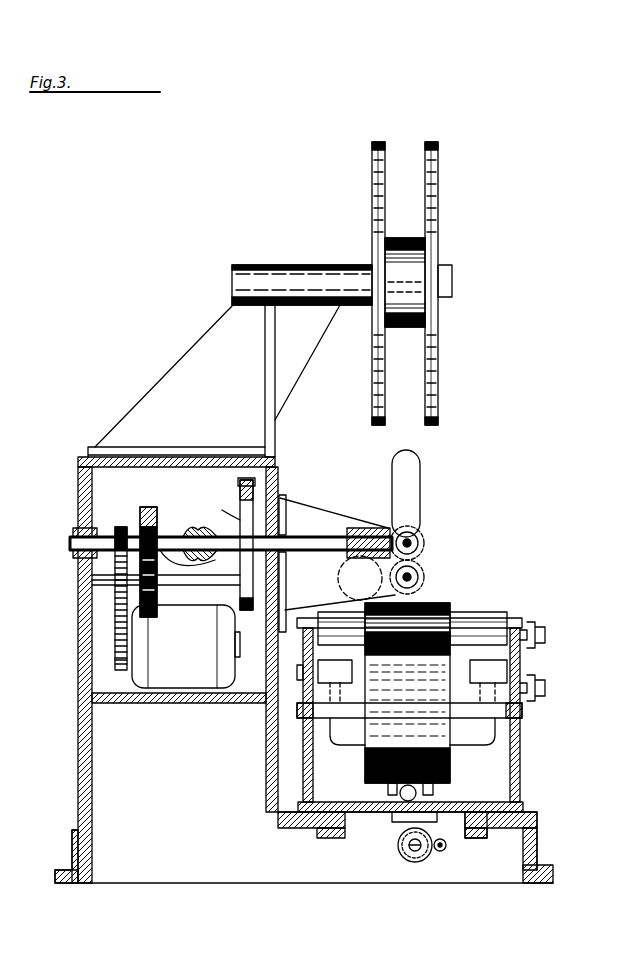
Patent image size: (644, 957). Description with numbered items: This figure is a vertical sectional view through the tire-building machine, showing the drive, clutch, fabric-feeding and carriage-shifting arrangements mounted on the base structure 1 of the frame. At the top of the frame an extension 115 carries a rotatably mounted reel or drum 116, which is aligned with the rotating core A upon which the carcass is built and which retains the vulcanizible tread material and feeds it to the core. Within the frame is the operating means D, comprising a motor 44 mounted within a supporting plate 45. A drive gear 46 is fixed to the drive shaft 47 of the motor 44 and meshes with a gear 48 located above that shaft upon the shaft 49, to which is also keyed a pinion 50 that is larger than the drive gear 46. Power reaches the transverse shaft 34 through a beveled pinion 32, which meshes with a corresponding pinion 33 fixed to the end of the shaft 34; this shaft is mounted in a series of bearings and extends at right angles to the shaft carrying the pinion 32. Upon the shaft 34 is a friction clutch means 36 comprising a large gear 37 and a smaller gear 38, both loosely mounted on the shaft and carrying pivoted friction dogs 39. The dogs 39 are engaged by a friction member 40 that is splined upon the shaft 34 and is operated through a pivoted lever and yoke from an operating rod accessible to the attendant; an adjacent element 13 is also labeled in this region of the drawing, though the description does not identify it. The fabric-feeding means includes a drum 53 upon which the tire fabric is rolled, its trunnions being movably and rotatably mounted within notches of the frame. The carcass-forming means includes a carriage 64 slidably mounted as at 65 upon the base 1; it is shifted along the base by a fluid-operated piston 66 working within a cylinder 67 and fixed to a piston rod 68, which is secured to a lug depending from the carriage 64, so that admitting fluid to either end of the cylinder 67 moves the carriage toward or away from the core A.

The base structure 1 is at (537, 831).
The worm 13 is at (192, 563).
The beveled pinion 32 is at (425, 544).
The pinion 33 is at (386, 528).
The shaft 34 is at (326, 556).
The friction clutch means 36 is at (238, 484).
The large gear 37 is at (247, 608).
The smaller gear 38 is at (150, 512).
The friction dogs 39 is at (221, 507).
The friction member 40 is at (212, 563).
The motor 44 is at (213, 703).
The supporting plate 45 is at (152, 703).
The drive gear 46 is at (115, 648).
The drive shaft 47 is at (120, 665).
The gear 48 is at (78, 581).
The shaft 49 is at (80, 560).
The pinion 50 is at (116, 608).
The drum 53 is at (470, 790).
The carriage 64 is at (522, 758).
The slidable mounting 65 is at (490, 836).
The fluid-operated piston 66 is at (409, 852).
The cylinder 67 is at (437, 851).
The piston rod 68 is at (400, 846).
The extension 115 is at (273, 263).
The reel or drum 116 is at (432, 208).
The rotating core A is at (417, 493).
The operating means D is at (186, 646).